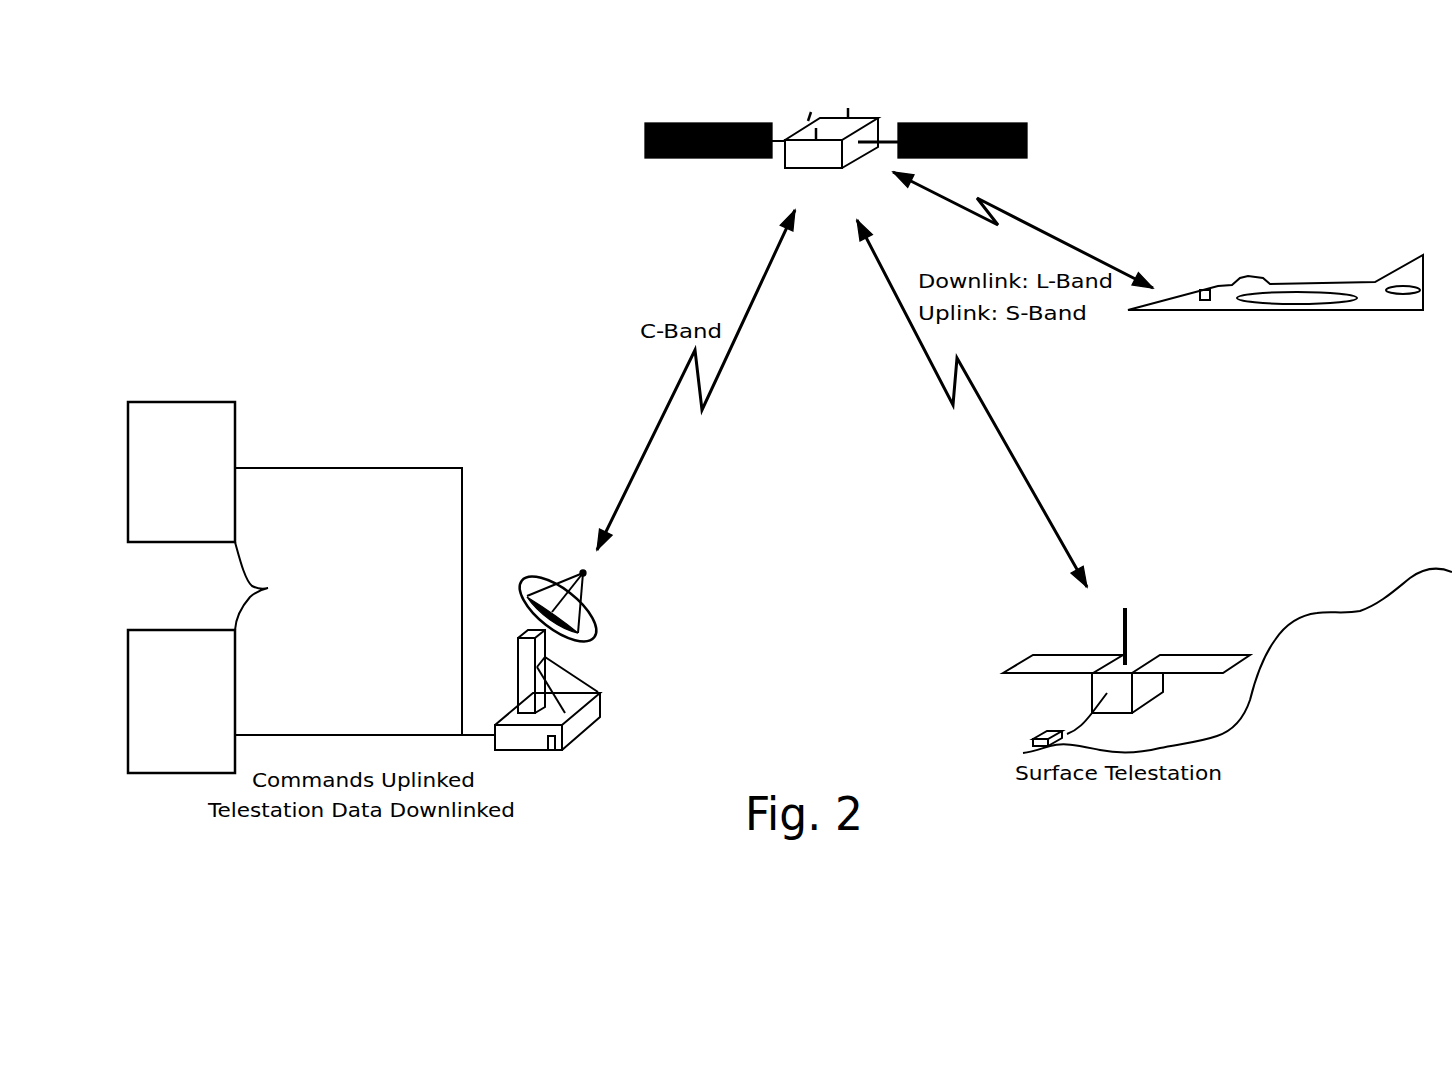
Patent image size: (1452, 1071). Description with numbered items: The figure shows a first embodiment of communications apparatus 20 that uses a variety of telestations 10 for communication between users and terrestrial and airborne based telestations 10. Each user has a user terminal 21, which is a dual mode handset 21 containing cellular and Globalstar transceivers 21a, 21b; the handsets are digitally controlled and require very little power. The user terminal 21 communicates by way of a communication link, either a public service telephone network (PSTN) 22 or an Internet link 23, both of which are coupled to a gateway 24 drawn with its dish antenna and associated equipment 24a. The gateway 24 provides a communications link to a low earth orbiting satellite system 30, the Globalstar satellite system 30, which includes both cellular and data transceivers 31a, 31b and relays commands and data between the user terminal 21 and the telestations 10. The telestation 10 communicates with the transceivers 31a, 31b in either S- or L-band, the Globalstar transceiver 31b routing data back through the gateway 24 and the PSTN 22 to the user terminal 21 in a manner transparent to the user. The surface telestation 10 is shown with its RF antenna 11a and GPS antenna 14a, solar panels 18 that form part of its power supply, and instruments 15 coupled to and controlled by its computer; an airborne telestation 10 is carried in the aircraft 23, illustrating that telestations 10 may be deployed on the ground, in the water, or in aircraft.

The communications apparatus 20 is at (272, 140).
The low earth orbiting satellite system 30 is at (784, 166).
The cellular transceiver 31a is at (830, 157).
The data transceiver 31b is at (834, 197).
The communications telestation 10 is at (1201, 291).
The Internet link 23 is at (1355, 284).
The solar panels 18 is at (1018, 667).
The RF antenna 11a is at (1128, 635).
The GPS antenna 14a is at (1193, 620).
The instruments 15 is at (1034, 737).
The user terminal 21 is at (270, 586).
The cellular transceiver 21a is at (212, 518).
The Globalstar transceiver 21b is at (181, 587).
The public service telephone network (PSTN) 22 is at (425, 733).
The gateway 24 is at (600, 692).
The ground station equipment 24a is at (580, 720).